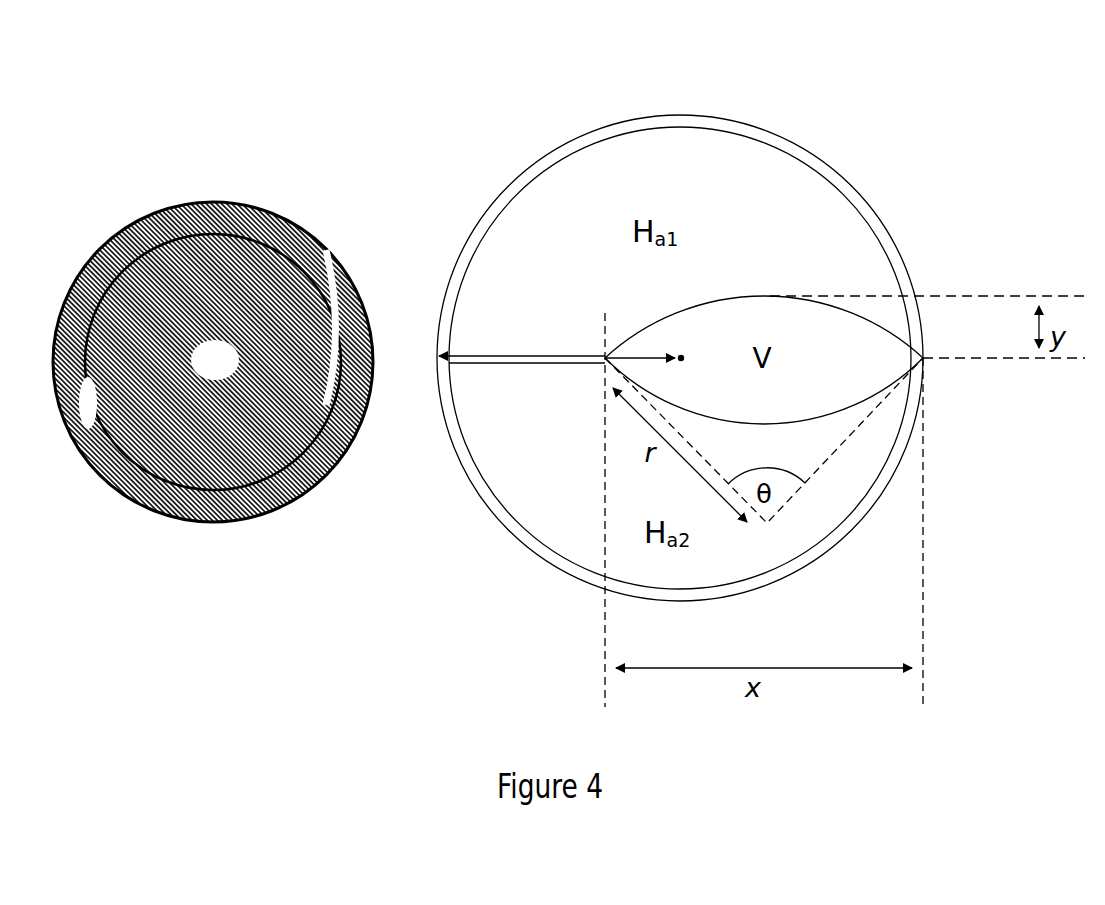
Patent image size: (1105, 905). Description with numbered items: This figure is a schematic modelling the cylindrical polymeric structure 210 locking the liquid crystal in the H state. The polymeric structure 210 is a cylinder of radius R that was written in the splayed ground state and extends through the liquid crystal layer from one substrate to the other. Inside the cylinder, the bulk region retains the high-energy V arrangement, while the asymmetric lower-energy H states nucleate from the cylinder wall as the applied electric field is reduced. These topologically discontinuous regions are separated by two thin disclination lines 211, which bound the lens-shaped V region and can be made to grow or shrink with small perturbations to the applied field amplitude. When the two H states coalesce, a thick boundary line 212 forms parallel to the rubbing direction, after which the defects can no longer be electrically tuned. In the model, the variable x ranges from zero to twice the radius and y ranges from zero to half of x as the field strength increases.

The polymeric structure 210 is at (677, 114).
The disclination lines 211 is at (773, 279).
The thick boundary line 212 is at (543, 336).